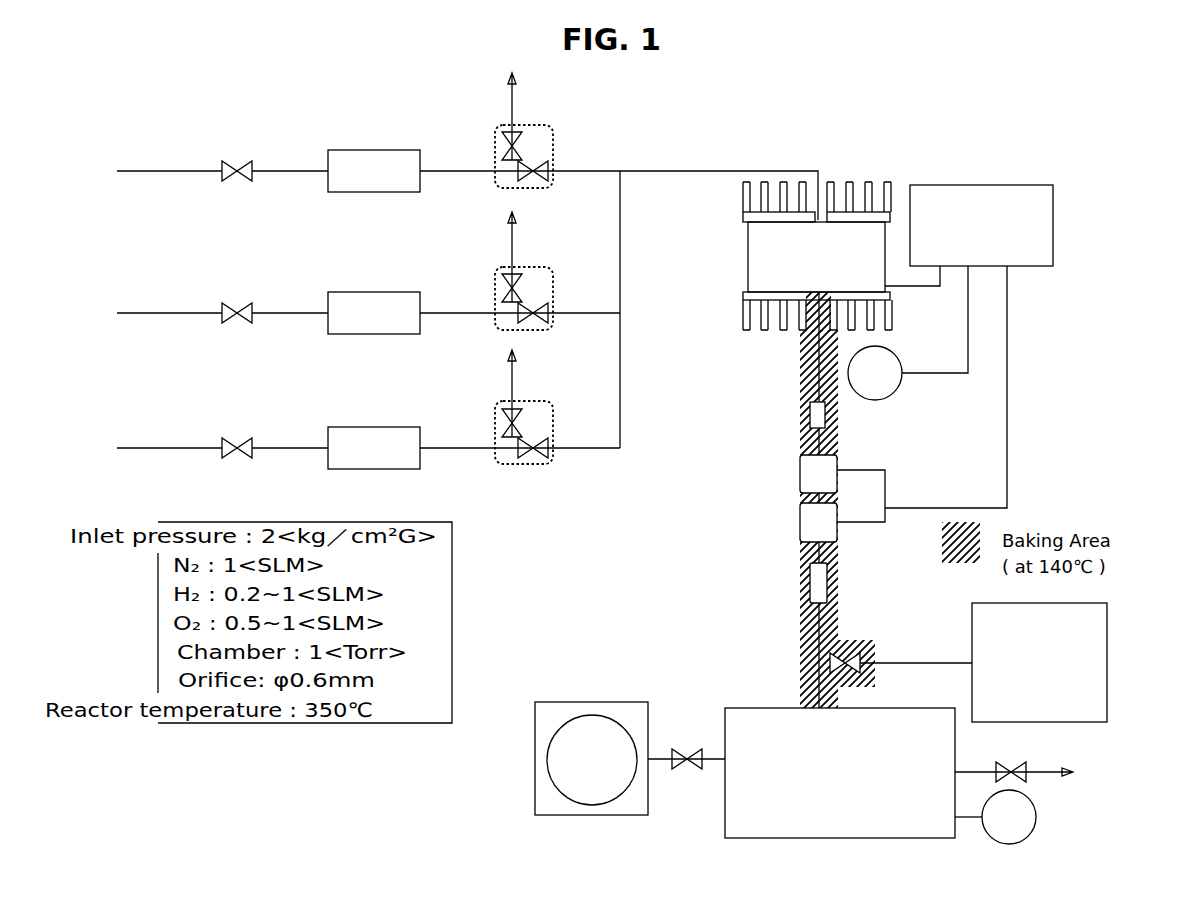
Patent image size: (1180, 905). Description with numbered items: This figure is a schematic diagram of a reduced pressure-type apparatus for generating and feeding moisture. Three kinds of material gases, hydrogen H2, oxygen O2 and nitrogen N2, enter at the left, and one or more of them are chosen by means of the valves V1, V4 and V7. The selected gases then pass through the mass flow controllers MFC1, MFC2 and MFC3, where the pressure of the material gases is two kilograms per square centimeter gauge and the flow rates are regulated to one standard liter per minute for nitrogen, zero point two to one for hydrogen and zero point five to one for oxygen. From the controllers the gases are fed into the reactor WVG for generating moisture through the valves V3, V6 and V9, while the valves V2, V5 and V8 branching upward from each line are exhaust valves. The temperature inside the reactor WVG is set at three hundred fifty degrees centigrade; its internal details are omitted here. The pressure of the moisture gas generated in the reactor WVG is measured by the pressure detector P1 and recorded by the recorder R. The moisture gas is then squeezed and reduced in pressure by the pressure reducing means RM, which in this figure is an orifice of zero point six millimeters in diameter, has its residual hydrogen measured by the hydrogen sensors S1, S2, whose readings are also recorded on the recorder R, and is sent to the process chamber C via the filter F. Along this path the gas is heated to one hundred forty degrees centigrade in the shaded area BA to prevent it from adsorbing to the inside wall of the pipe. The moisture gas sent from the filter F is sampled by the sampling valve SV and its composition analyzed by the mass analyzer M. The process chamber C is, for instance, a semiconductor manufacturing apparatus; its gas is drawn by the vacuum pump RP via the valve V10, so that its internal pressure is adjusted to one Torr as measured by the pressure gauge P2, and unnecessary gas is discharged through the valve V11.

The hydrogen gas H2 is at (167, 151).
The oxygen gas O2 is at (167, 293).
The nitrogen gas N2 is at (167, 428).
The valve V1 is at (237, 160).
The exhaust valve V2 is at (502, 152).
The valve V3 is at (538, 162).
The valve V4 is at (237, 303).
The exhaust valve V5 is at (502, 294).
The valve V6 is at (538, 304).
The valve V7 is at (237, 438).
The exhaust valve V8 is at (502, 425).
The valve V9 is at (540, 438).
The valve V10 is at (686, 749).
The valve V11 is at (1010, 762).
The mass flow controller MFC1 is at (374, 171).
The mass flow controller MFC2 is at (374, 313).
The mass flow controller MFC3 is at (374, 448).
The reactor for generating moisture WVG is at (740, 264).
The recorder R is at (1002, 185).
The pressure detector P1 is at (875, 373).
The pressure reducing means RM is at (827, 412).
The hydrogen sensor S1 is at (818, 474).
The hydrogen sensor S2 is at (818, 522).
The filter F is at (827, 583).
The shaded area BA is at (800, 632).
The sampling valve SV is at (862, 672).
The mass analyzer M is at (1108, 668).
The process chamber C is at (822, 839).
The vacuum pump RP is at (591, 776).
The pressure gauge P2 is at (1009, 817).